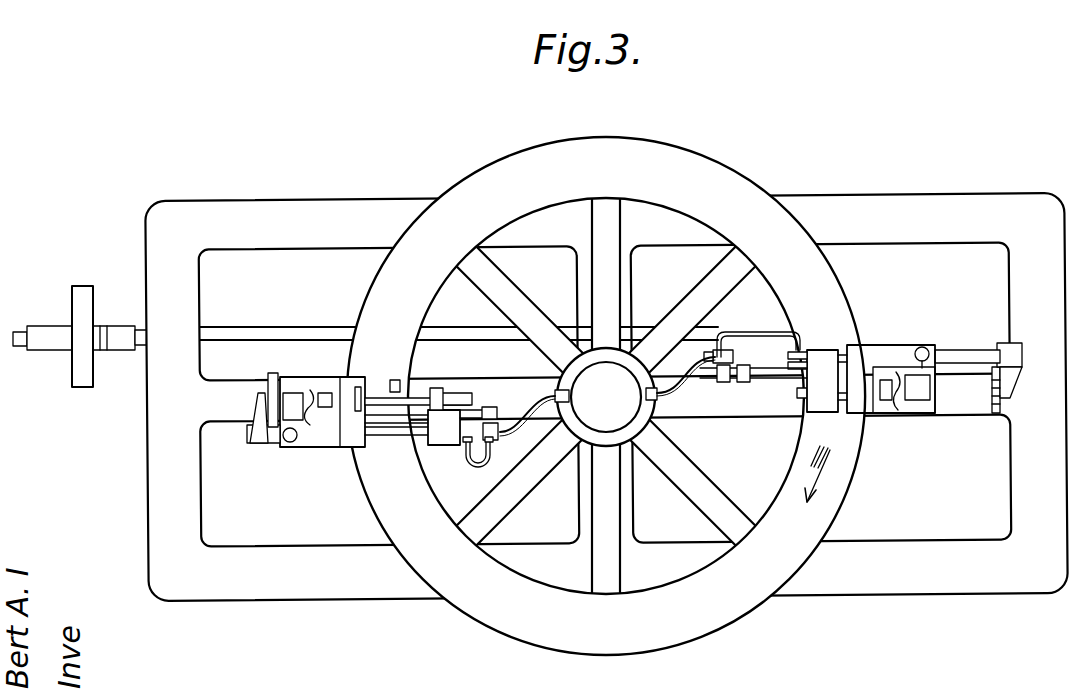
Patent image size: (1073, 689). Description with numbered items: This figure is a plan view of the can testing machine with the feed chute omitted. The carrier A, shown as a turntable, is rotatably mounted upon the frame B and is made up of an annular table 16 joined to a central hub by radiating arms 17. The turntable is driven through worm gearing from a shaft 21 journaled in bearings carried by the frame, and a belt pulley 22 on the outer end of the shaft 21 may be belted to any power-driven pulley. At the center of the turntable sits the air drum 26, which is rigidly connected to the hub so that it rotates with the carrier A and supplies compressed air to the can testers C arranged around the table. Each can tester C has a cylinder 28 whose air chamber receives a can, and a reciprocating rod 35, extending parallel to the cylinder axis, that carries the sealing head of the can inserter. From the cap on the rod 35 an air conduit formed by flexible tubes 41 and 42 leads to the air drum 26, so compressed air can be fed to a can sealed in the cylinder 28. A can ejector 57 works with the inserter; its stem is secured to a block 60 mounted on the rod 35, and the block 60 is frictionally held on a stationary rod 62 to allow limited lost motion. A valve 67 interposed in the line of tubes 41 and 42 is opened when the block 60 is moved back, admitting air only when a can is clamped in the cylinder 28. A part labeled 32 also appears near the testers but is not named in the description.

The annular table 16 is at (515, 623).
The radiating arms 17 is at (560, 516).
The shaft 21 is at (245, 331).
The belt pulley 22 is at (83, 386).
The air drum 26 is at (606, 397).
The cylinder 28 is at (296, 386).
The bracket 32 is at (270, 374).
The reciprocating rod 35 is at (401, 440).
The flexible tube 41 is at (478, 458).
The flexible tube 42 is at (532, 403).
The can ejector 57 is at (373, 397).
The block 60 is at (443, 438).
The stationary rod 62 is at (388, 421).
The valve 67 is at (496, 436).
The carrier A is at (606, 407).
The frame B is at (266, 198).
The can testers C is at (634, 410).